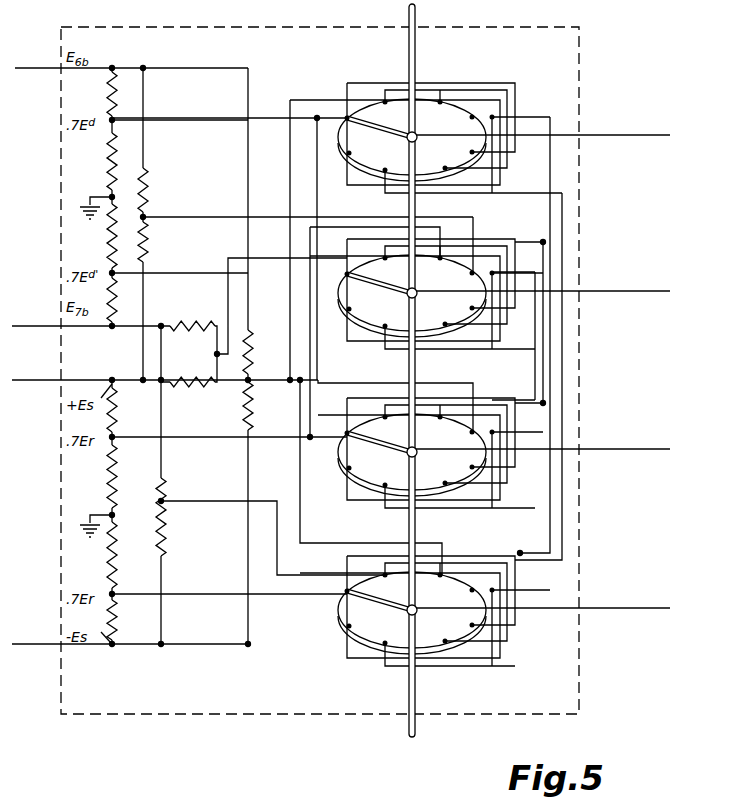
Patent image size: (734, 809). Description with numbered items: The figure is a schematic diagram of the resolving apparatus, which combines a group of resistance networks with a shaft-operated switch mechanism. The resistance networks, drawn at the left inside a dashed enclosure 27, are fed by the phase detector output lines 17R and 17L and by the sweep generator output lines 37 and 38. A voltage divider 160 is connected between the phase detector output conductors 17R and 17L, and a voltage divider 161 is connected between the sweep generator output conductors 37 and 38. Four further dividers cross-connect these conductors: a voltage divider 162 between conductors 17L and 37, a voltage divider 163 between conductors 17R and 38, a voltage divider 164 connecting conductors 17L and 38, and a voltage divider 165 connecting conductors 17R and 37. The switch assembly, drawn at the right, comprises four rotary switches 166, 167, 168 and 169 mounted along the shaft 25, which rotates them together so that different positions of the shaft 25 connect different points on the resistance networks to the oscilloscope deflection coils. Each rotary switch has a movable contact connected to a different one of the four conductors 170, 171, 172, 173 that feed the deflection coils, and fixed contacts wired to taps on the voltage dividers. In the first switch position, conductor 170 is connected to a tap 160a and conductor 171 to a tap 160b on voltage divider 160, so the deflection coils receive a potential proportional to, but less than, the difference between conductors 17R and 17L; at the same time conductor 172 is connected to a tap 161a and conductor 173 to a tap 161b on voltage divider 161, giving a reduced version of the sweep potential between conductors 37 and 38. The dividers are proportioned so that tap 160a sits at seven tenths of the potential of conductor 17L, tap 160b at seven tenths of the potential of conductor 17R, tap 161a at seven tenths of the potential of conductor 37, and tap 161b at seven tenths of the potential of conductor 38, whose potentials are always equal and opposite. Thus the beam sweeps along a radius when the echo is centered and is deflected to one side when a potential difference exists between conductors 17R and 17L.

The phase detector output line 17L is at (33, 72).
The phase detector output line 17R is at (51, 323).
The sweep generator output line 37 is at (32, 384).
The sweep generator output line 38 is at (28, 642).
The shaft 25 is at (408, 13).
The voltage divider network 27 is at (278, 716).
The voltage divider 160 is at (106, 171).
The tap 160a is at (113, 119).
The tap 160b is at (113, 274).
The voltage divider 161 is at (105, 504).
The tap 161a is at (112, 440).
The tap 161b is at (113, 596).
The voltage divider 162 is at (146, 193).
The voltage divider 163 is at (163, 532).
The voltage divider 164 is at (247, 398).
The voltage divider 165 is at (184, 380).
The rotary switch 166 is at (376, 160).
The rotary switch 167 is at (376, 316).
The rotary switch 168 is at (350, 455).
The rotary switch 169 is at (350, 614).
The conductor 170 is at (606, 140).
The conductor 171 is at (612, 294).
The conductor 172 is at (610, 452).
The conductor 173 is at (612, 612).